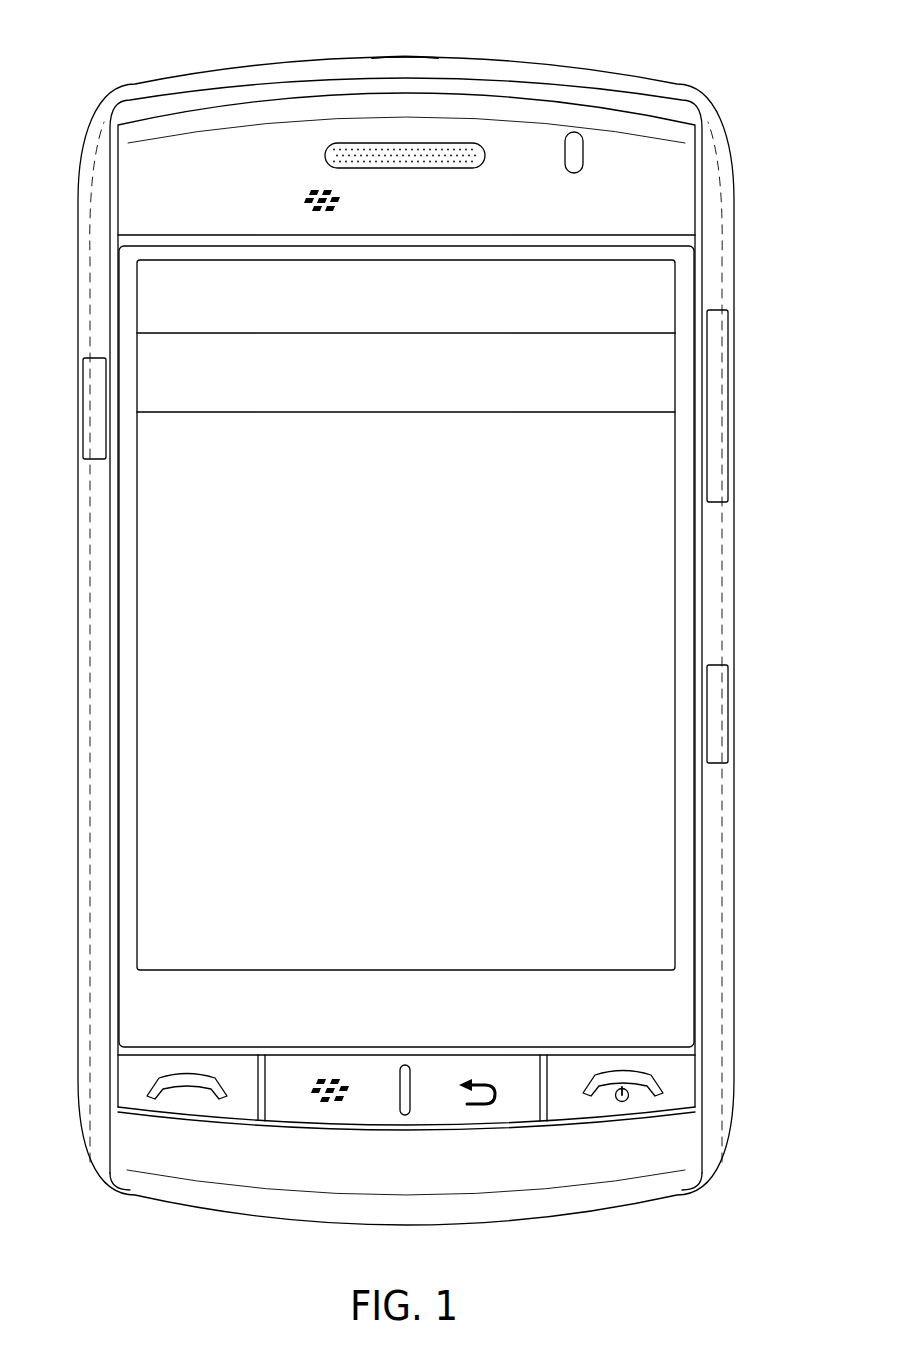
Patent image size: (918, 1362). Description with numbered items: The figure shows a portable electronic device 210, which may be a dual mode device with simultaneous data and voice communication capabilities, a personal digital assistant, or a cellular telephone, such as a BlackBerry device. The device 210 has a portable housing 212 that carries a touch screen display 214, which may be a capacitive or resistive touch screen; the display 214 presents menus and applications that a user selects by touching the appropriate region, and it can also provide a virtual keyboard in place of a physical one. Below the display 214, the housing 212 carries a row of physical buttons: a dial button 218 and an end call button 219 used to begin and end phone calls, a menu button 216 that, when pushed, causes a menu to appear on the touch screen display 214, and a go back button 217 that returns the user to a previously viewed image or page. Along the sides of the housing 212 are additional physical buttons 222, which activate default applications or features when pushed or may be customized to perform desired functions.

The portable electronic device 210 is at (792, 66).
The portable housing 212 is at (183, 74).
The touch screen display 214 is at (421, 629).
The menu button 216 is at (335, 1066).
The go back button 217 is at (477, 1066).
The dial button 218 is at (192, 1066).
The end call button 219 is at (619, 1066).
The additional physical buttons 222 is at (94, 412).